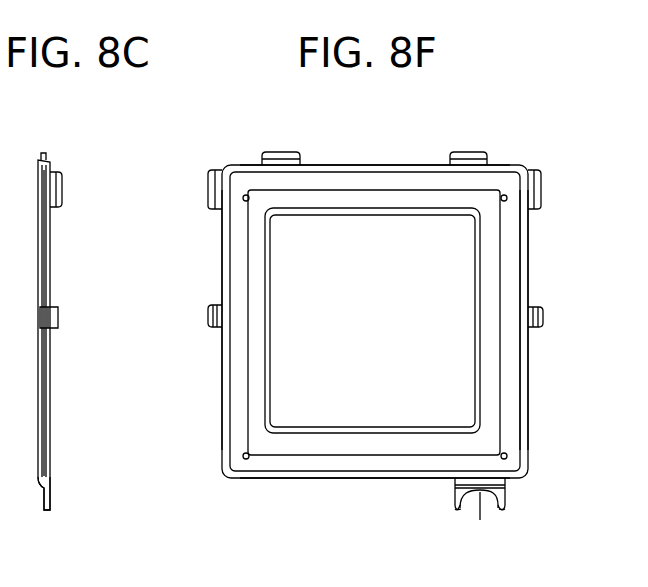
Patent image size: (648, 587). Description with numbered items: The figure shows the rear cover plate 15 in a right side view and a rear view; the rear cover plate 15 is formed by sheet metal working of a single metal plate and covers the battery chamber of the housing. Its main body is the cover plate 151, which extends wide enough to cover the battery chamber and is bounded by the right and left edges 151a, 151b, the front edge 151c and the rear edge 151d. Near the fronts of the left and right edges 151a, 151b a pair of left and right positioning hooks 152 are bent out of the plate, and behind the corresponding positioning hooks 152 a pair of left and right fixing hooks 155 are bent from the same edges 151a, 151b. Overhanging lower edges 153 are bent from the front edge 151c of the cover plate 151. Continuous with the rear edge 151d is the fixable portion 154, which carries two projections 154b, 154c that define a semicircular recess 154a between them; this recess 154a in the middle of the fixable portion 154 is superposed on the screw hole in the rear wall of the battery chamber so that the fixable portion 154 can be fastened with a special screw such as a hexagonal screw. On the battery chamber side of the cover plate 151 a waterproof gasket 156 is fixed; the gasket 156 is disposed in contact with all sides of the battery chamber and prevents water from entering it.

In FIG. 8C, the rear cover plate 15 is at (43, 143).
In FIG. 8F, the rear cover plate 15 is at (430, 122).
In FIG. 8F, the cover plate 151 is at (455, 278).
In FIG. 8F, the right edge of the cover plate 151a is at (528, 360).
In FIG. 8F, the left edge of the cover plate 151b is at (222, 360).
In FIG. 8F, the front edge of the cover plate 151c is at (364, 163).
In FIG. 8F, the rear edge of the cover plate 151d is at (358, 480).
In FIG. 8C, the positioning hook 152 is at (54, 192).
In FIG. 8F, the positioning hook 152 is at (212, 175).
In FIG. 8F, the overhanging lower edge 153 is at (281, 152).
In FIG. 8C, the fixable portion 154 is at (50, 495).
In FIG. 8F, the fixable portion 154 is at (505, 488).
In FIG. 8F, the semicircular recess 154a is at (480, 510).
In FIG. 8F, the projection 154b is at (498, 510).
In FIG. 8F, the projection 154c is at (456, 510).
In FIG. 8C, the fixing hook 155 is at (50, 318).
In FIG. 8F, the fixing hook 155 is at (208, 316).
In FIG. 8C, the waterproof gasket 156 is at (47, 430).
In FIG. 8F, the waterproof gasket 156 is at (525, 288).